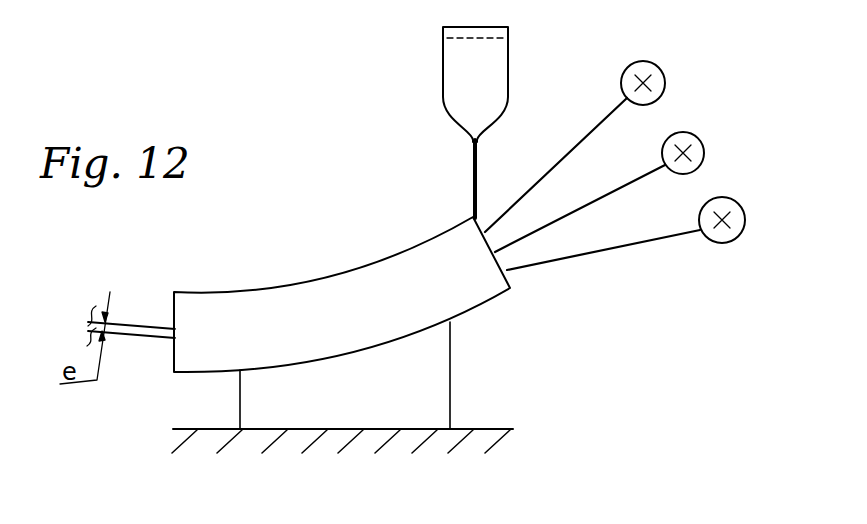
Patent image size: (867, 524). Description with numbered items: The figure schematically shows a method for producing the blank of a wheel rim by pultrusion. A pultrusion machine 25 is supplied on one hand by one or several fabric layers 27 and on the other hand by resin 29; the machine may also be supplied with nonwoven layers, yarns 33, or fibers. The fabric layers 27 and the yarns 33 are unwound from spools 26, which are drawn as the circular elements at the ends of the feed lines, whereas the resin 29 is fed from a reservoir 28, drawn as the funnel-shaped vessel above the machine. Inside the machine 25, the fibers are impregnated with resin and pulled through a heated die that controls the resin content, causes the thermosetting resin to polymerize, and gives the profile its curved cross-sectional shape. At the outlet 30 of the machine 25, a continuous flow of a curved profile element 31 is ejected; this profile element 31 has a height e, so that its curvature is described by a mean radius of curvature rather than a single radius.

The pultrusion machine 25 is at (303, 295).
The spools 26 is at (737, 200).
The fabric layers 27 is at (603, 258).
The reservoir 28 is at (508, 78).
The resin 29 is at (465, 78).
The outlet 30 is at (167, 343).
The curved profile element 31 is at (133, 330).
The yarns 33 is at (555, 167).